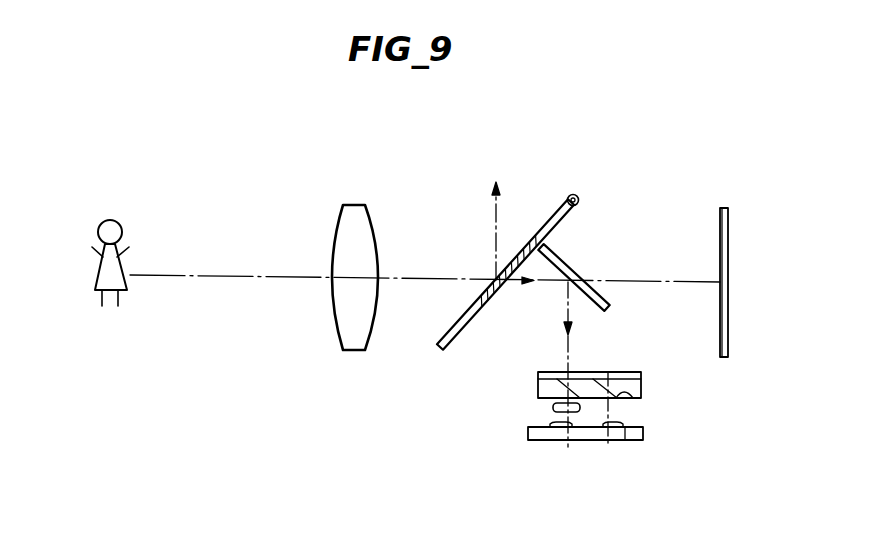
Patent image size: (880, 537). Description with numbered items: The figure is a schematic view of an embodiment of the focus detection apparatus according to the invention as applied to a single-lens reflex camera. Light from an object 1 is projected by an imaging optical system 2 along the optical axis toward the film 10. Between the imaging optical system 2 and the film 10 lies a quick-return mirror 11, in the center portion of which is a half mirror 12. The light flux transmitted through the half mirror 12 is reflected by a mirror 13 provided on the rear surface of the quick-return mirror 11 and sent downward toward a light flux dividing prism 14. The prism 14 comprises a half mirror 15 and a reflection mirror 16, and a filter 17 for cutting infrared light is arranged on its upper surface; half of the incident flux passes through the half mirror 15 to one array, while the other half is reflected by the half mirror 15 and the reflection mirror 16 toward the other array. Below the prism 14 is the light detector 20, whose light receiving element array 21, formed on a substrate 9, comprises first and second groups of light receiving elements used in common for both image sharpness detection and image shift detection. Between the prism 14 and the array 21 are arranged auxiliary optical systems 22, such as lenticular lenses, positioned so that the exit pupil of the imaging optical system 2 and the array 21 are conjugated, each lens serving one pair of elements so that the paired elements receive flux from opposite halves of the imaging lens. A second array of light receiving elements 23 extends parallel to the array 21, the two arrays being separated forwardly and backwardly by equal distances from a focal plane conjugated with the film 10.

The object 1 is at (118, 222).
The imaging optical system 2 is at (360, 207).
The substrate 9 is at (545, 476).
The film 10 is at (728, 235).
The quick-return mirror 11 is at (550, 213).
The half mirror 12 is at (476, 300).
The mirror 13 is at (565, 265).
The light flux dividing prism 14 is at (586, 374).
The half mirror 15 is at (538, 385).
The reflection mirror 16 is at (640, 394).
The filter 17 is at (613, 373).
The light detector 20 is at (656, 441).
The light receiving element array 21 is at (540, 437).
The auxiliary optical systems 22 is at (553, 407).
The second array of light receiving elements 23 is at (628, 441).